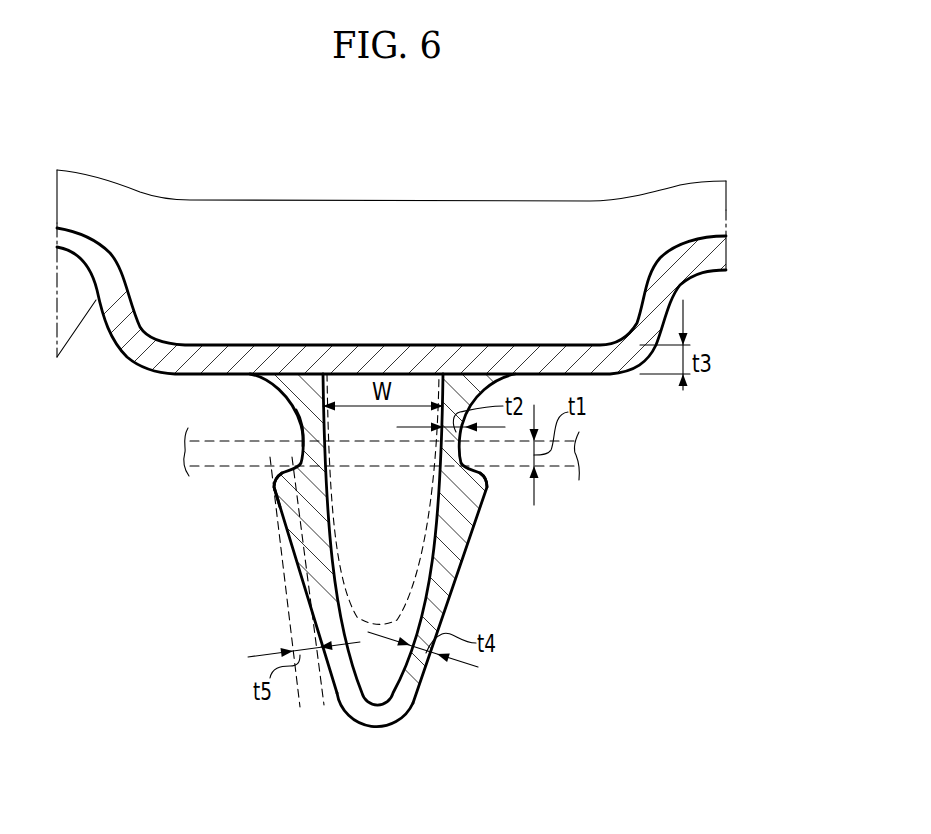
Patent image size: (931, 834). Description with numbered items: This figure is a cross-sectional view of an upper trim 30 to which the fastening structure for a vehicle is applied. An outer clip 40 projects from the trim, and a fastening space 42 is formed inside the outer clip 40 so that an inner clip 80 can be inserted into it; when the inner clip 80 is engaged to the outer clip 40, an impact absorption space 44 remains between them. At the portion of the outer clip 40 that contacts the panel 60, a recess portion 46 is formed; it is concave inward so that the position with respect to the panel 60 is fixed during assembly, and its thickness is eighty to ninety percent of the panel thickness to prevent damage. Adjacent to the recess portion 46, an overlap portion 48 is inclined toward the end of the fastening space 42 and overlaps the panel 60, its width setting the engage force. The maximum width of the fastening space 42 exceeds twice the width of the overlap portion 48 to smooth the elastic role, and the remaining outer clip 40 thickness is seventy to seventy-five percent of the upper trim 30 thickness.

The panel body 30 is at (697, 286).
The outer clip 40 is at (398, 417).
The fastening space 42 is at (383, 548).
The impact absorption space 44 is at (377, 675).
The recess portion 46 is at (302, 446).
The overlap portion 48 is at (274, 487).
The panel 60 is at (502, 467).
The inner clip 80 is at (393, 625).